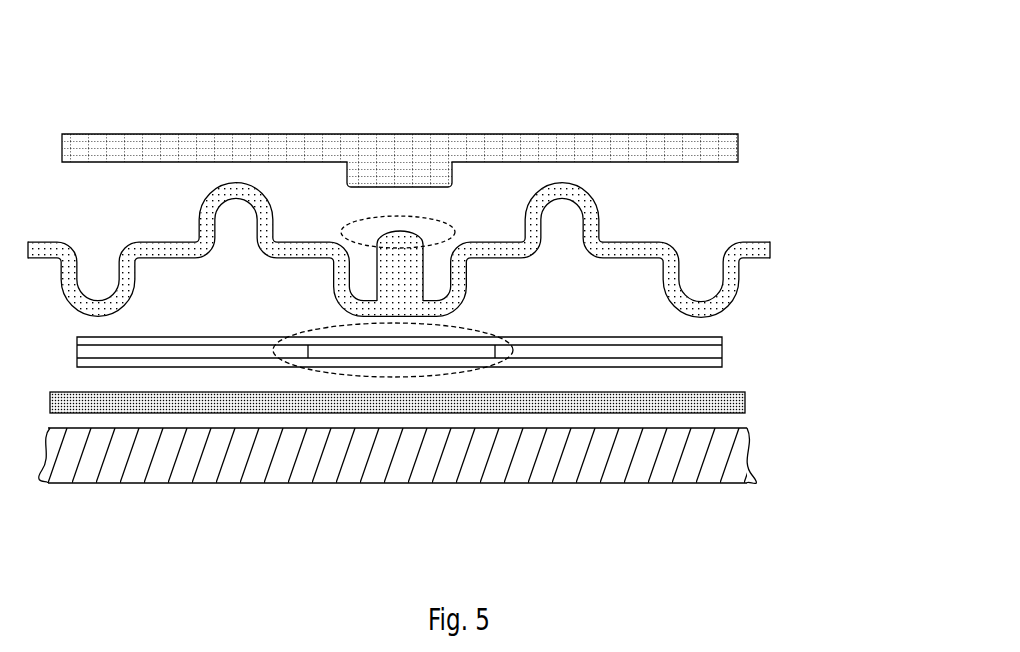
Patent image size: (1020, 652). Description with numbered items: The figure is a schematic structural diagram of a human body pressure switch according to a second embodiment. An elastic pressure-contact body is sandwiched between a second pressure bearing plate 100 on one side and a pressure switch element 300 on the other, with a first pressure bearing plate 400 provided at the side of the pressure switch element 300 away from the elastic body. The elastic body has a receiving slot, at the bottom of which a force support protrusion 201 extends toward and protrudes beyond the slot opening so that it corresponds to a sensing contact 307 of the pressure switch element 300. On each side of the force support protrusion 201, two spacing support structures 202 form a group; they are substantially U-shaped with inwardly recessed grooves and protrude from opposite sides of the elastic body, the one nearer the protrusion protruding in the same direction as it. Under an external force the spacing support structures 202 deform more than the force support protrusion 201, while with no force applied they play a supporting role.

The second pressure bearing plate 100 is at (740, 136).
The force support protrusion 201 is at (343, 237).
The spacing support structure 202 is at (597, 208).
The pressure switch element 300 is at (722, 352).
The sensing contact 307 is at (333, 376).
The first pressure bearing plate 400 is at (637, 470).